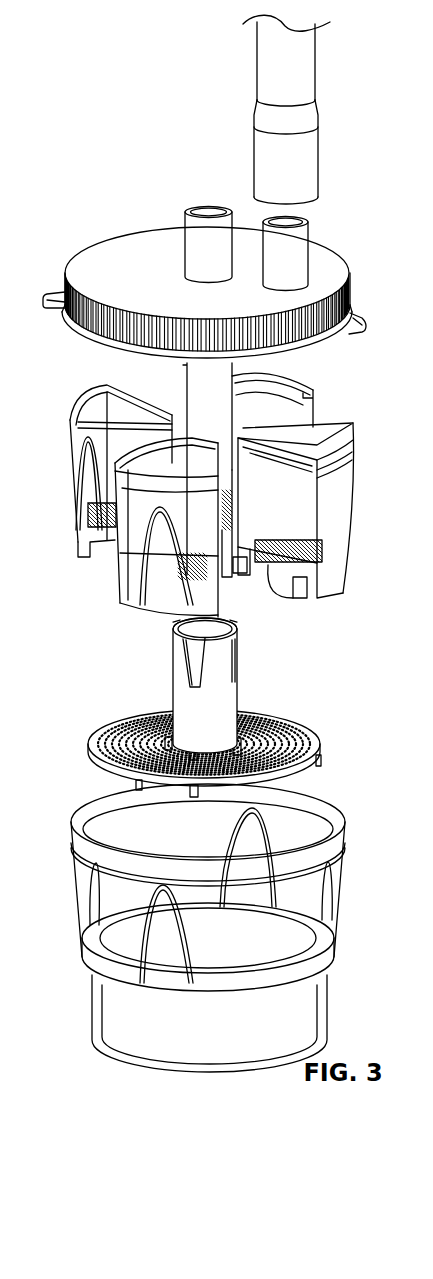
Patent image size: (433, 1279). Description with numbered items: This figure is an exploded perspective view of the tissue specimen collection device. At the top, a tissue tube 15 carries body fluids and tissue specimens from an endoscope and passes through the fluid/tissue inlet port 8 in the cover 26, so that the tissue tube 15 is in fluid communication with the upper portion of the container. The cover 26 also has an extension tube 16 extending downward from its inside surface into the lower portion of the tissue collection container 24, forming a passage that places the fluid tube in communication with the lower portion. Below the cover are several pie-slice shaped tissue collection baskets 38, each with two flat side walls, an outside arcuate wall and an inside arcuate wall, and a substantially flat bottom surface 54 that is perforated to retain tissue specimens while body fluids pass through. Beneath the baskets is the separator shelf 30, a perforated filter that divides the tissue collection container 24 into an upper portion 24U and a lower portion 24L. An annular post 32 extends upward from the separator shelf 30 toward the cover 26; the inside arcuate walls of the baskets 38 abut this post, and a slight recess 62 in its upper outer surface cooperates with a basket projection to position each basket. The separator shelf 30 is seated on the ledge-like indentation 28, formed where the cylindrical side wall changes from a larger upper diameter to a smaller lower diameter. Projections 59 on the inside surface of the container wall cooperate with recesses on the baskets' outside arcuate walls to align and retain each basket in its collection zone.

The tissue tube 15 is at (324, 174).
The fluid/tissue inlet port 8 is at (298, 255).
The cover 26 is at (362, 311).
The extension tube 16 is at (192, 363).
The tissue collection basket 38 is at (315, 380).
The bottom surface 54 is at (271, 576).
The recess 62 is at (192, 650).
The annular post 32 is at (209, 685).
The separator shelf 30 is at (305, 723).
The upper portion 24U is at (107, 823).
The tissue collection container 24 is at (217, 925).
The ledge-like indentation 28 is at (320, 940).
The projection 59 is at (170, 950).
The lower portion 24L is at (118, 1042).